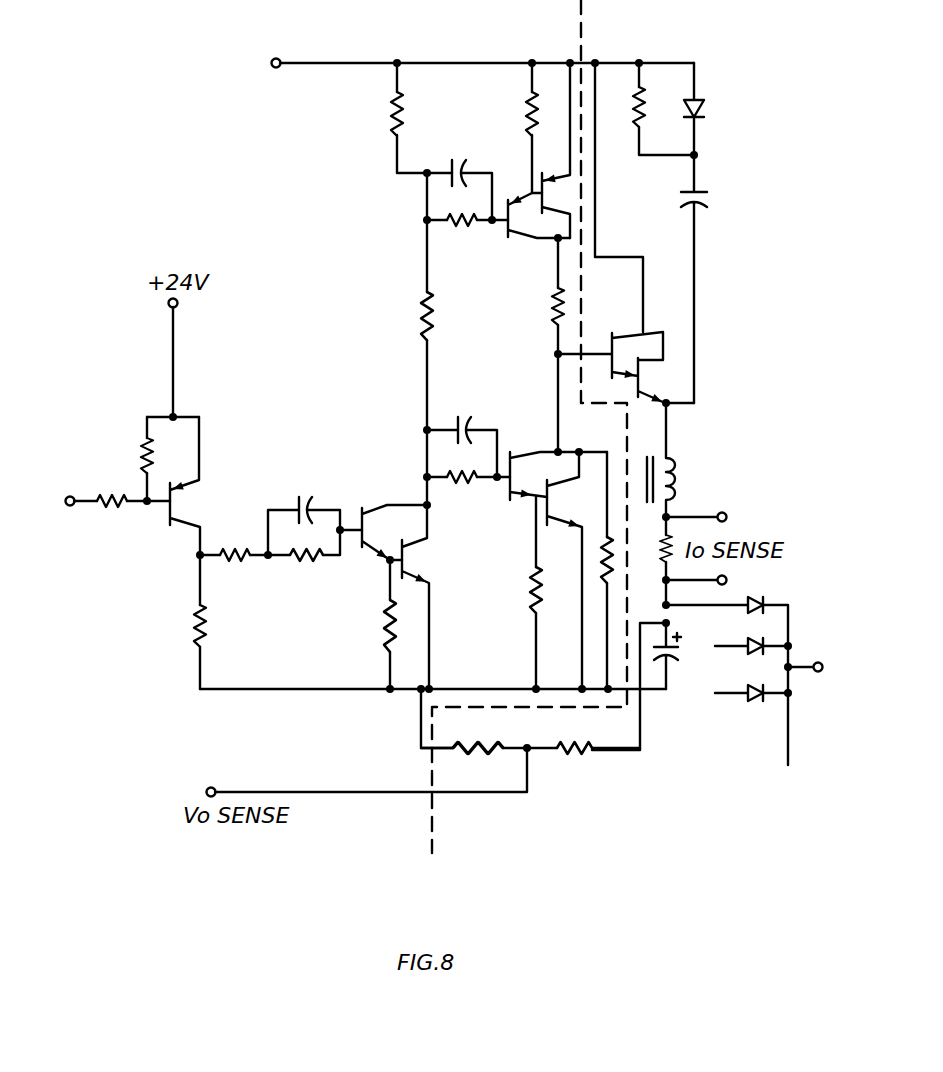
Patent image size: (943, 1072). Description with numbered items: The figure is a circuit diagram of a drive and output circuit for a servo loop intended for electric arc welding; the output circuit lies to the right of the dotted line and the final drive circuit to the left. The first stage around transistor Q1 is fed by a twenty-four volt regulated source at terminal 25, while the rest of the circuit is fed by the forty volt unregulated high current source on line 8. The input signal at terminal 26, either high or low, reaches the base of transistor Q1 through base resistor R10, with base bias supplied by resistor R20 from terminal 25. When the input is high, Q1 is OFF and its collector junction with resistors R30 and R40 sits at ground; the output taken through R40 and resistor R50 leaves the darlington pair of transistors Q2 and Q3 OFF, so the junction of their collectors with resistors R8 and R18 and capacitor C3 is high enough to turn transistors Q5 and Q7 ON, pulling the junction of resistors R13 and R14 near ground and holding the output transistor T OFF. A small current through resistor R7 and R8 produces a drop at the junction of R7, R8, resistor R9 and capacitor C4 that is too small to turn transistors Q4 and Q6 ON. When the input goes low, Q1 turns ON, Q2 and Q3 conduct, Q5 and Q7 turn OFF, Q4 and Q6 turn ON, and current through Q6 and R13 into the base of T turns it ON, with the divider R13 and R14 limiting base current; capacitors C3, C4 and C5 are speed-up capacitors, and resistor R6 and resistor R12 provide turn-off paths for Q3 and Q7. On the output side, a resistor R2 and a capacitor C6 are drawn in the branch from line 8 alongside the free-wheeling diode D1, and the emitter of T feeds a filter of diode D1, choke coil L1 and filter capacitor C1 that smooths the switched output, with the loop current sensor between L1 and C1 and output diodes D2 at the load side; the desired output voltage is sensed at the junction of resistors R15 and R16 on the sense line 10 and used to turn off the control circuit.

The line 8 is at (332, 63).
The terminal 25 is at (179, 306).
The terminal 26 is at (70, 507).
The output voltage sense line 10 is at (327, 792).
The resistor R7 is at (402, 118).
The capacitor C4 is at (471, 175).
The resistor R9 is at (467, 214).
The transistor Q4 is at (537, 230).
The transistor Q6 is at (554, 150).
The resistor R2 is at (663, 109).
The free-wheeling diode D1 is at (712, 109).
The capacitor C6 is at (710, 279).
The resistor R8 is at (405, 362).
The resistor R13 is at (536, 345).
The output transistor T is at (611, 355).
The capacitor C5 is at (462, 429).
The resistor R18 is at (468, 491).
The transistor Q5 is at (558, 457).
The transistor Q7 is at (562, 570).
The choke coil L1 is at (678, 460).
The resistor R12 is at (514, 593).
The resistor R14 is at (607, 577).
The filter capacitor C1 is at (680, 656).
The diodes D2 is at (744, 681).
The resistor R15 is at (474, 735).
The resistor R16 is at (583, 733).
The resistor R6 is at (368, 624).
The resistor R30 is at (225, 622).
The resistor R40 is at (234, 569).
The resistor R50 is at (304, 560).
The capacitor C3 is at (304, 511).
The transistor Q1 is at (195, 486).
The transistor Q2 is at (394, 517).
The transistor Q3 is at (428, 597).
The resistor R20 is at (122, 459).
The base resistor R10 is at (122, 516).